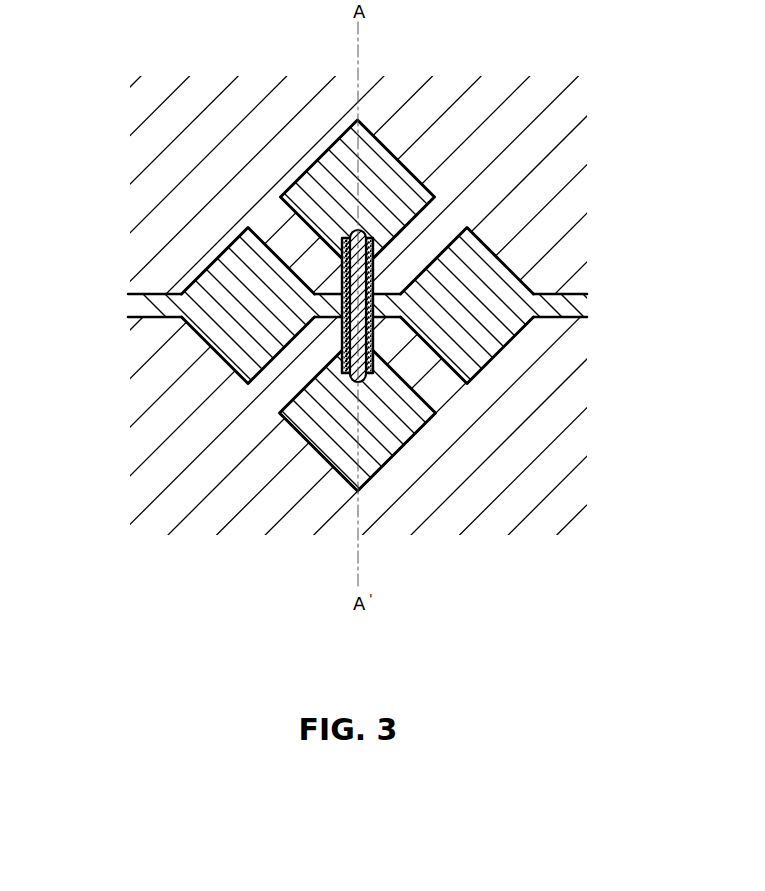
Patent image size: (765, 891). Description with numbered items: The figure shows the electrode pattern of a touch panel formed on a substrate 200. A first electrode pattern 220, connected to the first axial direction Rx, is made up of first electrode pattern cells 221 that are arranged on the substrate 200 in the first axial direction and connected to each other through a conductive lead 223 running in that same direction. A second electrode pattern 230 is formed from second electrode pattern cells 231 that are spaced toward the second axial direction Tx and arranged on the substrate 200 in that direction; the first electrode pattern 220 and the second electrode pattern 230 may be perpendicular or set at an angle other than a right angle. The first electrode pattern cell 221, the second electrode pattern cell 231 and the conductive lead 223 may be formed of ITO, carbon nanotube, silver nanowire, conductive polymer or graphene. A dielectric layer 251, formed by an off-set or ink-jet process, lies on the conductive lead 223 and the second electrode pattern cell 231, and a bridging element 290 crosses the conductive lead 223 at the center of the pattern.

The substrate 200 is at (527, 116).
The first electrode pattern 220 is at (508, 355).
The first electrode pattern cell 221 is at (213, 330).
The conductive lead 223 is at (378, 295).
The second electrode pattern 230 is at (406, 466).
The second electrode pattern cell 231 is at (327, 165).
The dielectric layer 251 is at (342, 337).
The bridge electrode 290 is at (357, 380).